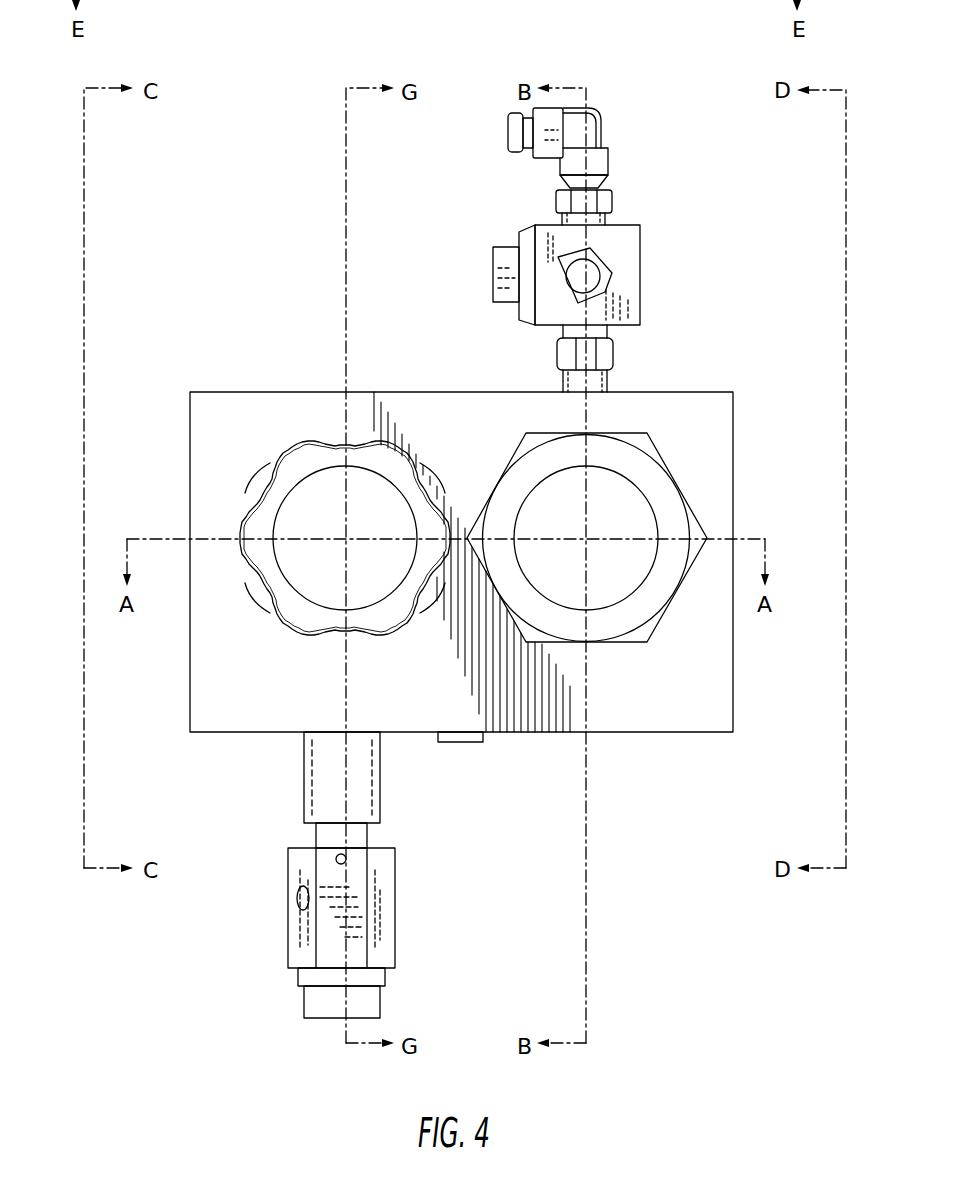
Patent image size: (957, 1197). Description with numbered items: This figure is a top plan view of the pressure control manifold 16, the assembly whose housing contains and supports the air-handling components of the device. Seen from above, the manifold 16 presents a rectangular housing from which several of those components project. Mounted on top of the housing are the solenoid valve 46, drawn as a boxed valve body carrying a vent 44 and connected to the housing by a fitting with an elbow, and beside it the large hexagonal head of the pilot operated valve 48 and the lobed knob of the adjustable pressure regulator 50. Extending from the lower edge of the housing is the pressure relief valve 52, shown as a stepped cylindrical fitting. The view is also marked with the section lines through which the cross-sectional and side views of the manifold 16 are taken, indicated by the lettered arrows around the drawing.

The pressure control manifold 16 is at (224, 293).
The vent 44 is at (612, 278).
The solenoid valve 46 is at (642, 243).
The pilot operated valve 48 is at (677, 487).
The adjustable pressure regulator 50 is at (256, 592).
The pressure relief valve 52 is at (395, 905).